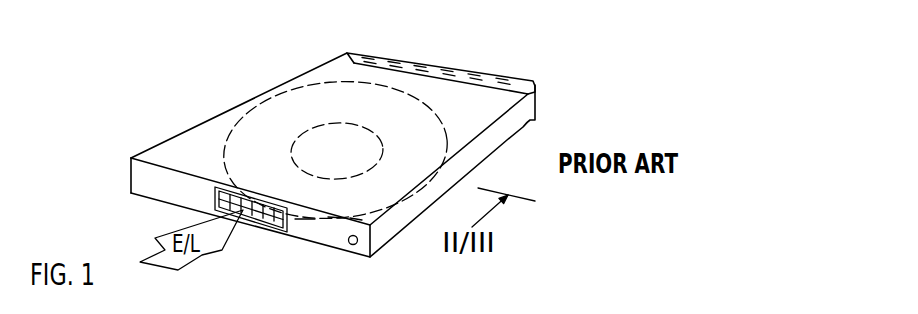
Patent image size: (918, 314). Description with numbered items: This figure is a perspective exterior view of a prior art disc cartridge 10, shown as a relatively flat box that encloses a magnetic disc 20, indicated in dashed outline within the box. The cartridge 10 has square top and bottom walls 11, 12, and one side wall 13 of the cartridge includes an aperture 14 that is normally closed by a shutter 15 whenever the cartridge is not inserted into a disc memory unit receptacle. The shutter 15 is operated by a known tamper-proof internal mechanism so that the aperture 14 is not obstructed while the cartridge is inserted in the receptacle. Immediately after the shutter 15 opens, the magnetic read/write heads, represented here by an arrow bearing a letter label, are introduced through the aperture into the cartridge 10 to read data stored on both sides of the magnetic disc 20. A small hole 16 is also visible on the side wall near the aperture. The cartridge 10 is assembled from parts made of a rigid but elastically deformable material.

The cartridge 10 is at (143, 139).
The top wall 11 is at (198, 138).
The bottom wall 12 is at (148, 198).
The side wall 13 is at (134, 177).
The aperture 14 is at (285, 227).
The shutter 15 is at (265, 228).
The hole 16 is at (347, 245).
The magnetic disc 20 is at (335, 149).